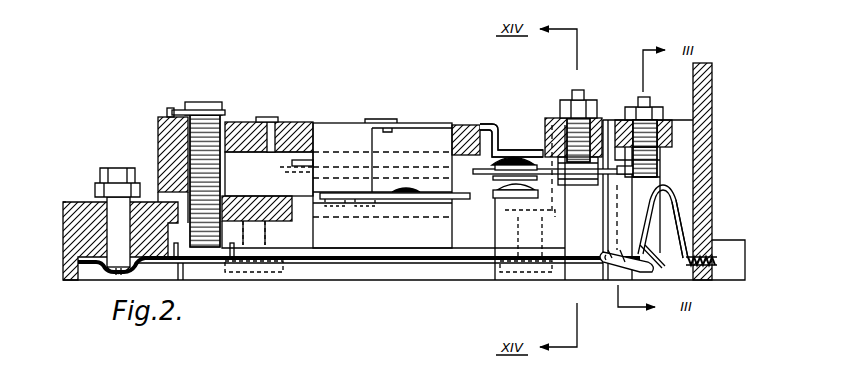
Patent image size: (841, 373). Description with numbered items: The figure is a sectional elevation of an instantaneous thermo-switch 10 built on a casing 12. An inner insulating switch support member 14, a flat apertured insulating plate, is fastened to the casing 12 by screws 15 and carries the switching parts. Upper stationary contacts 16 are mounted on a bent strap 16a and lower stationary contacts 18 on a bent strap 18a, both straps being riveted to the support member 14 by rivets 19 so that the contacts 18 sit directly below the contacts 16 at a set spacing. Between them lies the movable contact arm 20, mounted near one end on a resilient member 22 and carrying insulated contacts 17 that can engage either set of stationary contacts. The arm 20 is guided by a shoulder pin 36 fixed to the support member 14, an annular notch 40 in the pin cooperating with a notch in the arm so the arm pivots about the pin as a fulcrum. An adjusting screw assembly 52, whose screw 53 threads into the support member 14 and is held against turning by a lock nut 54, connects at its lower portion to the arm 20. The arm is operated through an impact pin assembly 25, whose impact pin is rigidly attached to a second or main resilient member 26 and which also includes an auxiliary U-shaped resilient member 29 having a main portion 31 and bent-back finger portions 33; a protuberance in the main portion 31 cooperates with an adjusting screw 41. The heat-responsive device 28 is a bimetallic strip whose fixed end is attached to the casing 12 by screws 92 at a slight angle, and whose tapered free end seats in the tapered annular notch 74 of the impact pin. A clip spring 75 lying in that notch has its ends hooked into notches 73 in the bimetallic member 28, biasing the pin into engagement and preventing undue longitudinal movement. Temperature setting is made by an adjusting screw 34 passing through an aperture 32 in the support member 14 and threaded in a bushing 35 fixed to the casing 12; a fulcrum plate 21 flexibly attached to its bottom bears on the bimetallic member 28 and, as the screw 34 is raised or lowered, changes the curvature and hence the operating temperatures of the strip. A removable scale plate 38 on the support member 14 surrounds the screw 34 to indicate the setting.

The instantaneous thermo-switch 10 is at (93, 149).
The casing 12 is at (68, 243).
The inner insulating switch support member 14 is at (307, 122).
The screws 15 is at (298, 280).
The stationary contacts 16 is at (513, 160).
The bent strap 16a is at (399, 124).
The contacts 17 is at (520, 170).
The stationary contacts 18 is at (500, 190).
The bent strap 18a is at (462, 199).
The rivets 19 is at (462, 122).
The movable contact arm 20 is at (285, 185).
The fulcrum plate 21 is at (228, 262).
The resilient member 22 is at (592, 182).
The impact pin assembly 25 is at (602, 98).
The second or main resilient member 26 is at (668, 120).
The heat-responsive device 28 is at (432, 262).
The auxiliary U-shaped resilient member 29 is at (680, 197).
The main portion 31 is at (685, 227).
The aperture 32 is at (227, 118).
The finger portions 33 is at (651, 276).
The adjusting screw 34 is at (205, 108).
The bushing 35 is at (158, 200).
The shoulder pin 36 is at (285, 166).
The scale plate 38 is at (285, 118).
The annular notch 40 is at (300, 172).
The adjusting screw 41 is at (717, 264).
The adjusting screw assembly 52 is at (560, 118).
The screw 53 is at (581, 100).
The lock nut 54 is at (572, 112).
The notches 73 is at (580, 284).
The tapered annular notch 74 is at (656, 265).
The clip spring 75 is at (612, 284).
The screws 92 is at (95, 177).